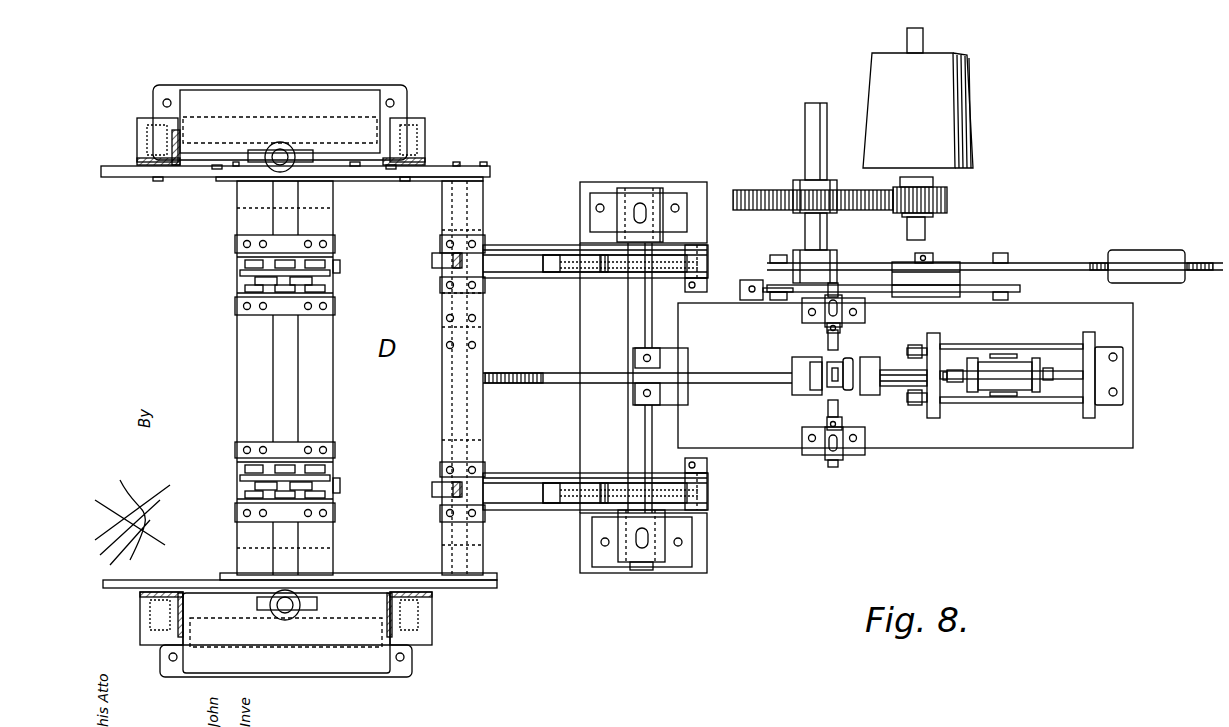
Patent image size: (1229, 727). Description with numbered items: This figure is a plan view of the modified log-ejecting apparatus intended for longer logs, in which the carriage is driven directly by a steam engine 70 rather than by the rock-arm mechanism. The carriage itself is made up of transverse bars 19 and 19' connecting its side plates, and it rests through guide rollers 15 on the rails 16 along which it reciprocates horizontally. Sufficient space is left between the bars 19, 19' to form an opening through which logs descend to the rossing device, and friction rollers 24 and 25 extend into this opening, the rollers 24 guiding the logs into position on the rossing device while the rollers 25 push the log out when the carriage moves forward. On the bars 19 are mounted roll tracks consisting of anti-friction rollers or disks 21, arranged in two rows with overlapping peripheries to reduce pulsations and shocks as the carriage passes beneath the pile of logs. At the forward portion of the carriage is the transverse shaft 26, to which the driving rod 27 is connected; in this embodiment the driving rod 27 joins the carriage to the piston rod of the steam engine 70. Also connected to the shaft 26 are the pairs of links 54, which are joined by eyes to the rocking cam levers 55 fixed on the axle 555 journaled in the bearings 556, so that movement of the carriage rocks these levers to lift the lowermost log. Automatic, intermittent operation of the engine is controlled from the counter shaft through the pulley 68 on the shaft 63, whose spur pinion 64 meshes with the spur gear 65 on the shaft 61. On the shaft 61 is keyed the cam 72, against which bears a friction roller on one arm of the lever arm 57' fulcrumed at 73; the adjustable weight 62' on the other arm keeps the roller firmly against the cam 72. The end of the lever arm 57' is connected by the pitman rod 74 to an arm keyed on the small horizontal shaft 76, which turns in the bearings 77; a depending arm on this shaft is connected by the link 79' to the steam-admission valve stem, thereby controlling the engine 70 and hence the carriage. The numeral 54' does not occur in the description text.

The guide rollers 15 is at (478, 166).
The rails 16 is at (447, 167).
The transverse bars 19 is at (285, 378).
The transverse bar 19' is at (481, 378).
The anti-friction rollers or disks 21 is at (240, 273).
The friction rollers 24 is at (435, 262).
The friction rollers 25 is at (340, 265).
The transverse shaft 26 is at (465, 426).
The driving rod 27 is at (741, 372).
The links 54 is at (595, 278).
The lower arm 54' is at (595, 484).
The rocking cam levers 55 is at (628, 262).
The axle 555 is at (632, 409).
The bearings 556 is at (631, 196).
The lever arm 57' is at (995, 262).
The shaft 61 is at (805, 232).
The adjustable weight 62' is at (1151, 248).
The shaft 63 is at (923, 32).
The spur pinion 64 is at (947, 195).
The spur gear 65 is at (762, 190).
The pulley 68 is at (918, 110).
The steam engine 70 is at (1045, 400).
The cam 72 is at (812, 277).
The fulcrum 73 is at (932, 262).
The pitman rod 74 is at (752, 286).
The small horizontal shaft 76 is at (840, 343).
The bearings 77 is at (825, 316).
The link 79' is at (968, 347).